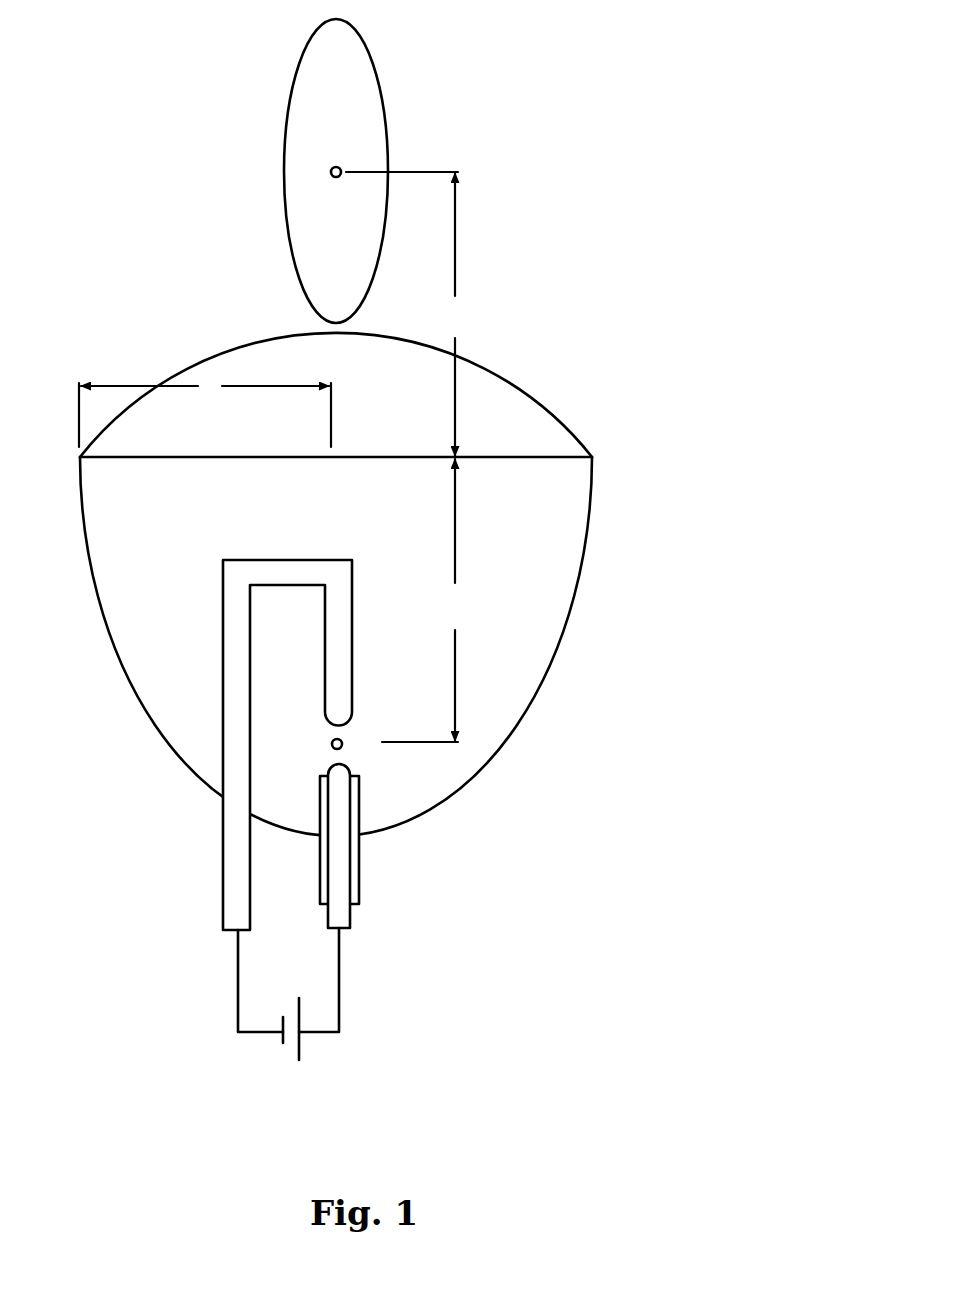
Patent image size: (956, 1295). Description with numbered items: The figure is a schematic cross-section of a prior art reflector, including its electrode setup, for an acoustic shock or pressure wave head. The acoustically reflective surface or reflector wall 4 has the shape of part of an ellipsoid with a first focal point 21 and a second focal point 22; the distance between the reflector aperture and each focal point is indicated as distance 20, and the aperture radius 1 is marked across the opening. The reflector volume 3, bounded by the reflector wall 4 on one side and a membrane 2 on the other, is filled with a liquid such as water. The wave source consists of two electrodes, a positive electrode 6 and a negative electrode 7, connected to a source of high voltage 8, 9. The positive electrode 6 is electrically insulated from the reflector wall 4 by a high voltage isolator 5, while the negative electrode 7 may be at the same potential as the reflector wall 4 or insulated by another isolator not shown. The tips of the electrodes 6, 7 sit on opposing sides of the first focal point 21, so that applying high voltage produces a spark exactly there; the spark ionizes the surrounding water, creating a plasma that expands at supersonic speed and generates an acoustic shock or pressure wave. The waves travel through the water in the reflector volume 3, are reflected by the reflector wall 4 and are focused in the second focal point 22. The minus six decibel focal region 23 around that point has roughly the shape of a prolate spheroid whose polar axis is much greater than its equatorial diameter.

The aperture radius 1 is at (205, 409).
The membrane 2 is at (557, 410).
The reflector volume 3 is at (336, 489).
The reflector wall 4 is at (580, 585).
The high voltage isolator 5 is at (360, 885).
The positive electrode 6 is at (355, 920).
The negative electrode 7 is at (220, 897).
The source of high voltage 8 is at (306, 1038).
The source of high voltage 9 is at (276, 1035).
The distance between aperture and focal point 20 is at (409, 457).
The first focal point 21 is at (347, 748).
The second focal point 22 is at (328, 172).
The focal region 23 is at (383, 97).